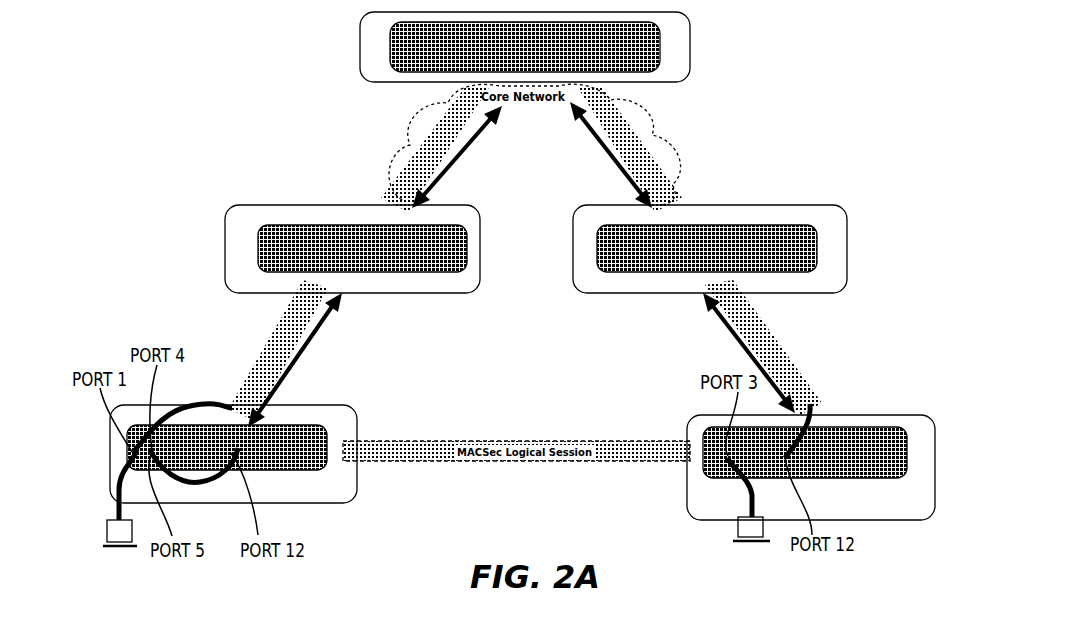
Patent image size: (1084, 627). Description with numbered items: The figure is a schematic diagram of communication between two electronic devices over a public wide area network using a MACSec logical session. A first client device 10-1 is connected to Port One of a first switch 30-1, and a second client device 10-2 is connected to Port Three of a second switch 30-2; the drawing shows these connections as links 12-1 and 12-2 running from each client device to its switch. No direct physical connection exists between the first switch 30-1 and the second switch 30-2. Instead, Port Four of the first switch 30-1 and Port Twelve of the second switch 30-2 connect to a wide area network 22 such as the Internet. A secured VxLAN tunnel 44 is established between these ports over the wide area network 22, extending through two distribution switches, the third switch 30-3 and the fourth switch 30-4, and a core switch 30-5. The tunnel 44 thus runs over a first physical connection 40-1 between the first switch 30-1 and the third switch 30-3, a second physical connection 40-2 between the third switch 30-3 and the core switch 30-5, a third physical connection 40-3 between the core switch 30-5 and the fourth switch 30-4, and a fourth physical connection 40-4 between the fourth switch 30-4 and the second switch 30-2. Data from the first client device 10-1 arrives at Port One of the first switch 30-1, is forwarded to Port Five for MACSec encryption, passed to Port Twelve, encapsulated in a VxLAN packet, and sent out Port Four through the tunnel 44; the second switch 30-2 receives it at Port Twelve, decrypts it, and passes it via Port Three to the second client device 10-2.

The wide area network 22 is at (852, 54).
The first switch 30-1 is at (312, 432).
The second switch 30-2 is at (885, 432).
The third switch 30-3 is at (282, 232).
The fourth switch 30-4 is at (795, 232).
The core switch 30-5 is at (392, 52).
The first physical connection 40-1 is at (312, 307).
The second physical connection 40-2 is at (448, 174).
The third physical connection 40-3 is at (604, 157).
The fourth physical connection 40-4 is at (741, 348).
The secured VxLAN tunnel 44 is at (596, 113).
The first client device 10-1 is at (107, 531).
The second client device 10-2 is at (738, 529).
The host connection 12-1 is at (115, 485).
The host connection 12-2 is at (750, 493).